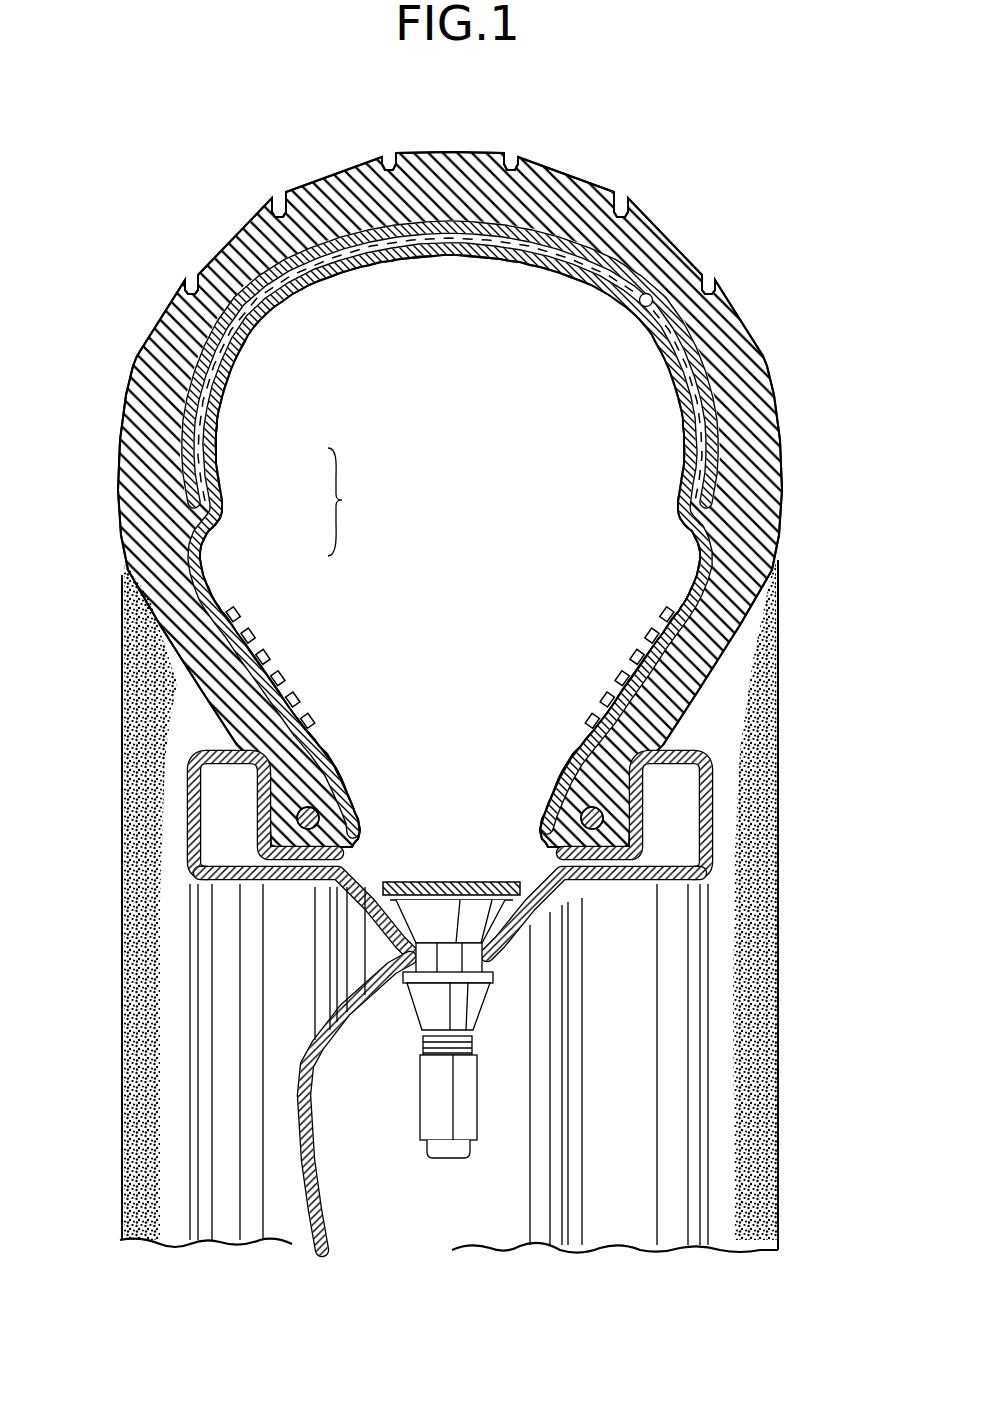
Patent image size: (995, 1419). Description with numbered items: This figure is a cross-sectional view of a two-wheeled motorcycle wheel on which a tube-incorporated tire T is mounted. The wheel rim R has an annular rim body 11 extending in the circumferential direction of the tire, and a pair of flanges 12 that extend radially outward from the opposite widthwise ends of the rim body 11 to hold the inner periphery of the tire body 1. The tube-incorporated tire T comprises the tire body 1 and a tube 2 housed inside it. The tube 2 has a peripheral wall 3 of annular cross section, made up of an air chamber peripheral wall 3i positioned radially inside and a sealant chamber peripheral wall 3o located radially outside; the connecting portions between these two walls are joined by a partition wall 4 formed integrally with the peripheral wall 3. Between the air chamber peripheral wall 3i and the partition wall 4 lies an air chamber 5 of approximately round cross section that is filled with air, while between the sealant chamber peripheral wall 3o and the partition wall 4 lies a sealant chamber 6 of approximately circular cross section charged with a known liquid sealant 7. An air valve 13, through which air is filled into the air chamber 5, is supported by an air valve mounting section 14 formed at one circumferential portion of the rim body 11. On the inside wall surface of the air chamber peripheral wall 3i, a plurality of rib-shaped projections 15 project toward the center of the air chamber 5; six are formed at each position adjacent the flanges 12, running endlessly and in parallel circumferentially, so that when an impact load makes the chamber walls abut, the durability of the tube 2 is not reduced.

The tire body 1 is at (608, 183).
The tube 2 is at (718, 438).
The peripheral wall 3 is at (346, 502).
The sealant chamber peripheral wall 3o is at (207, 398).
The air chamber peripheral wall 3i is at (210, 583).
The partition wall 4 is at (421, 242).
The air chamber 5 is at (471, 527).
The sealant chamber 6 is at (640, 305).
The liquid sealant 7 is at (250, 328).
The rim body 11 is at (265, 884).
The flanges 12 is at (190, 752).
The air valve 13 is at (410, 1020).
The air valve mounting section 14 is at (462, 957).
The rib-shaped projections 15 is at (313, 717).
The wheel rim R is at (733, 1062).
The tube-incorporated tire T is at (746, 290).